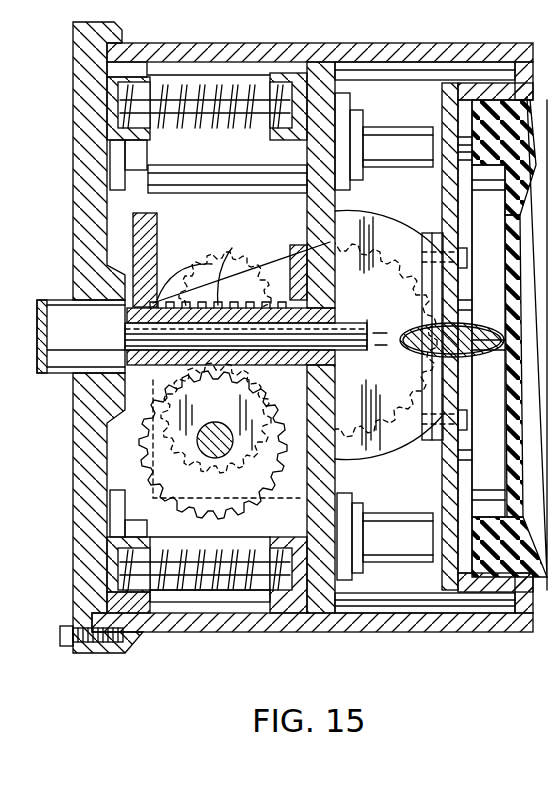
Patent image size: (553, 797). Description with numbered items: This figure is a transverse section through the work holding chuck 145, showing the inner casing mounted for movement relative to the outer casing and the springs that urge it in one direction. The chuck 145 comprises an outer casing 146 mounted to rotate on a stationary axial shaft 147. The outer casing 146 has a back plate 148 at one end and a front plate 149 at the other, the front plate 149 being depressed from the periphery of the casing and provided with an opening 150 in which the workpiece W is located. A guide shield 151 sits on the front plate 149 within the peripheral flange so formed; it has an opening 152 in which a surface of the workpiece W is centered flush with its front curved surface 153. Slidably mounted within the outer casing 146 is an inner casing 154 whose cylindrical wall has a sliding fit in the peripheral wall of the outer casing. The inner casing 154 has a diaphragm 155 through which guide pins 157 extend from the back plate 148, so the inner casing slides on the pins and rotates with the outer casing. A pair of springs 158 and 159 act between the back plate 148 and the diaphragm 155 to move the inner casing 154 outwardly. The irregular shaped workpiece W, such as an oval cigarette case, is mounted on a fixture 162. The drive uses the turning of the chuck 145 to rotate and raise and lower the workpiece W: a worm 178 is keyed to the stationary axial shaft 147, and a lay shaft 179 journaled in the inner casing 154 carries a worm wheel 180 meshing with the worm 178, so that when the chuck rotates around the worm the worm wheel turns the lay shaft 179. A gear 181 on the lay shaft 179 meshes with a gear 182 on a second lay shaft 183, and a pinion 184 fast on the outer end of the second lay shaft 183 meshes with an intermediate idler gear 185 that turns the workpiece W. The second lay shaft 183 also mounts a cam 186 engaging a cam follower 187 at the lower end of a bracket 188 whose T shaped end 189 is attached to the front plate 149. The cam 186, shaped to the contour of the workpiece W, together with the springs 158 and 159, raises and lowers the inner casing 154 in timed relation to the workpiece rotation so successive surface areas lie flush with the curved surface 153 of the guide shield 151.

The chuck 145 is at (71, 91).
The outer casing 146 is at (262, 45).
The stationary axial shaft 147 is at (352, 328).
The back plate 148 is at (73, 160).
The front plate 149 is at (442, 110).
The opening 150 is at (440, 233).
The guide shield 151 is at (493, 100).
The opening 152 is at (467, 260).
The front curved surface 153 is at (515, 417).
The inner casing 154 is at (210, 632).
The diaphragm 155 is at (307, 217).
The guide pins 157 is at (385, 165).
The spring 158 is at (190, 128).
The spring 159 is at (222, 548).
The fixture 162 is at (470, 355).
The worm 178 is at (210, 273).
The lay shaft 179 is at (206, 455).
The worm wheel 180 is at (248, 512).
The gear 181 is at (143, 470).
The gear 182 is at (190, 283).
The second lay shaft 183 is at (125, 340).
The pinion 184 is at (216, 418).
The intermediate idler gear 185 is at (385, 458).
The cam 186 is at (125, 272).
The cam follower 187 is at (360, 333).
The bracket 188 is at (385, 353).
The T shaped end 189 is at (425, 262).
The workpiece W is at (500, 323).